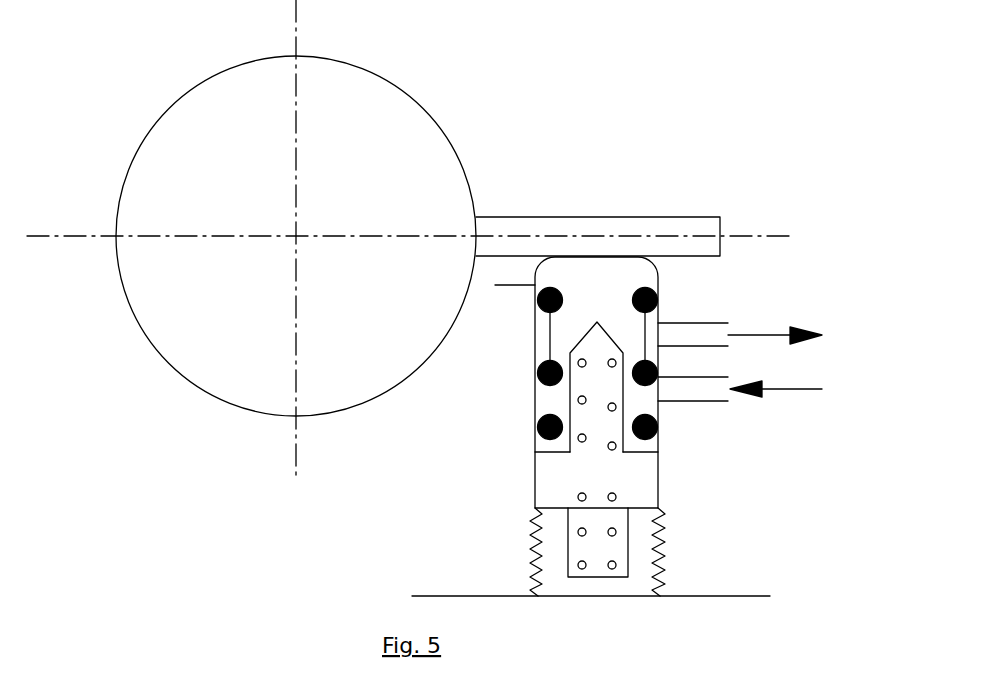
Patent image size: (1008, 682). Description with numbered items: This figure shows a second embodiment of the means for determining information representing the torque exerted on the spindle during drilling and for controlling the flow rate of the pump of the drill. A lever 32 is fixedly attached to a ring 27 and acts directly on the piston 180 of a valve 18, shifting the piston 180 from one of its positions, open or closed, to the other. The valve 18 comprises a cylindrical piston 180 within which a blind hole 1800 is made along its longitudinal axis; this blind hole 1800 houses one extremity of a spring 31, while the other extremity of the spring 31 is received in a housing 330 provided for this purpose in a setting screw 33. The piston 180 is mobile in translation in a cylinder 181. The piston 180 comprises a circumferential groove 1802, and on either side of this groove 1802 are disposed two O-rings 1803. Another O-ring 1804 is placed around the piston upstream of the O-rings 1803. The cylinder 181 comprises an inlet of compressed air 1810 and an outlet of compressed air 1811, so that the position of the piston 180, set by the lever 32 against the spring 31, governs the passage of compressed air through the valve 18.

The ring 27 is at (425, 105).
The lever 32 is at (637, 225).
The piston 180 is at (653, 268).
The cylinder 181 is at (640, 473).
The O-rings 1803 is at (660, 302).
The circumferential groove 1802 is at (545, 335).
The O-ring 1804 is at (536, 433).
The outlet of compressed air 1811 is at (690, 337).
The inlet of compressed air 1810 is at (707, 392).
The valve 18 is at (775, 425).
The blind hole 1800 is at (600, 427).
The spring 31 is at (614, 497).
The housing 330 is at (610, 545).
The setting screw 33 is at (630, 587).